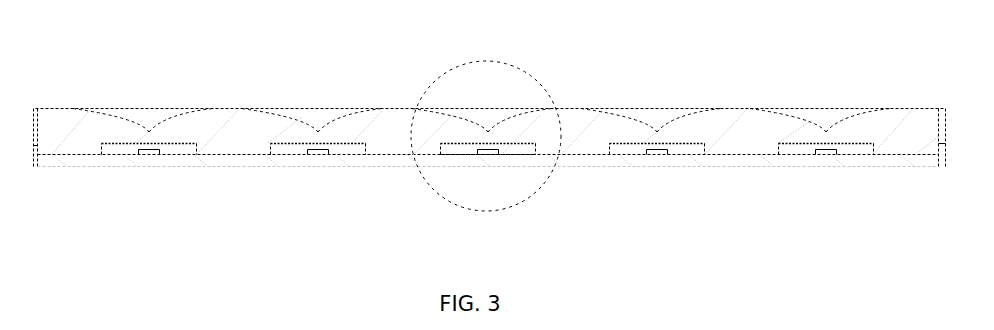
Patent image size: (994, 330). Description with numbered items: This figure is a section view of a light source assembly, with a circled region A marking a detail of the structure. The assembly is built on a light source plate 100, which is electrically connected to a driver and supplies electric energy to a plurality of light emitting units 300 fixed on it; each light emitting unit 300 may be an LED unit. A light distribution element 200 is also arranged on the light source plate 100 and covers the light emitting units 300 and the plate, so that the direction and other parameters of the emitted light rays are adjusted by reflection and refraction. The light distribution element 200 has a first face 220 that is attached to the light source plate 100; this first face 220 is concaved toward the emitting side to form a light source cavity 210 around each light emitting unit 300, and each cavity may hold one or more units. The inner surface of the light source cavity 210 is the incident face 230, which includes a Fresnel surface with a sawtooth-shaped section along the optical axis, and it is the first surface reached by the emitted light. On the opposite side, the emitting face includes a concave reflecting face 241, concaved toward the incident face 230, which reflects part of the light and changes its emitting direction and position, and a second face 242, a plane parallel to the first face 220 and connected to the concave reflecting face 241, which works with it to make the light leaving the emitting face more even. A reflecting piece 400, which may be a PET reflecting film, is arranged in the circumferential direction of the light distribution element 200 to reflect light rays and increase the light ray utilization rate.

The light source plate 100 is at (732, 158).
The light distribution element 200 is at (360, 113).
The light source cavity 210 is at (523, 154).
The first face 220 is at (240, 154).
The incident face 230 is at (455, 154).
The concave reflecting face 241 is at (477, 125).
The second face 242 is at (627, 113).
The light emitting unit 300 is at (489, 154).
The reflecting piece 400 is at (942, 108).
The enlarged region A is at (557, 155).